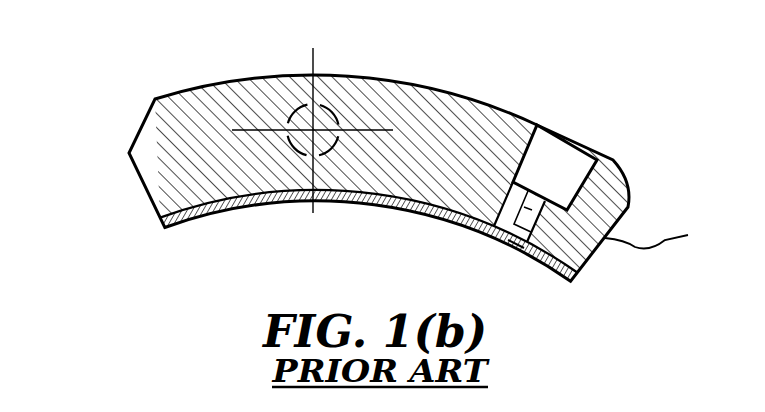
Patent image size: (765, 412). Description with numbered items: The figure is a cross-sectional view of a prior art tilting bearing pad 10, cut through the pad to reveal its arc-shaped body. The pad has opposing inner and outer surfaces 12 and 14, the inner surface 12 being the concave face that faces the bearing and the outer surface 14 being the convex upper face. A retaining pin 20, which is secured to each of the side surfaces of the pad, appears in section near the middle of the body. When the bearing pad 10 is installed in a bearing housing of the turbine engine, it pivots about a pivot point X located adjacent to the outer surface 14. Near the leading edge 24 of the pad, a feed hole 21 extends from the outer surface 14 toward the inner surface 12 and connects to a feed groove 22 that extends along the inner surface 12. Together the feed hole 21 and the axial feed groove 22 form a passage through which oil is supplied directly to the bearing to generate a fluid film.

The tilting bearing pad 10 is at (96, 78).
The inner surface 12 is at (238, 207).
The outer surface 14 is at (436, 89).
The retaining pin 20 is at (331, 112).
The feed hole 21 is at (530, 207).
The feed groove 22 is at (520, 247).
The leading edge 24 is at (665, 233).
The pivot point X is at (312, 62).